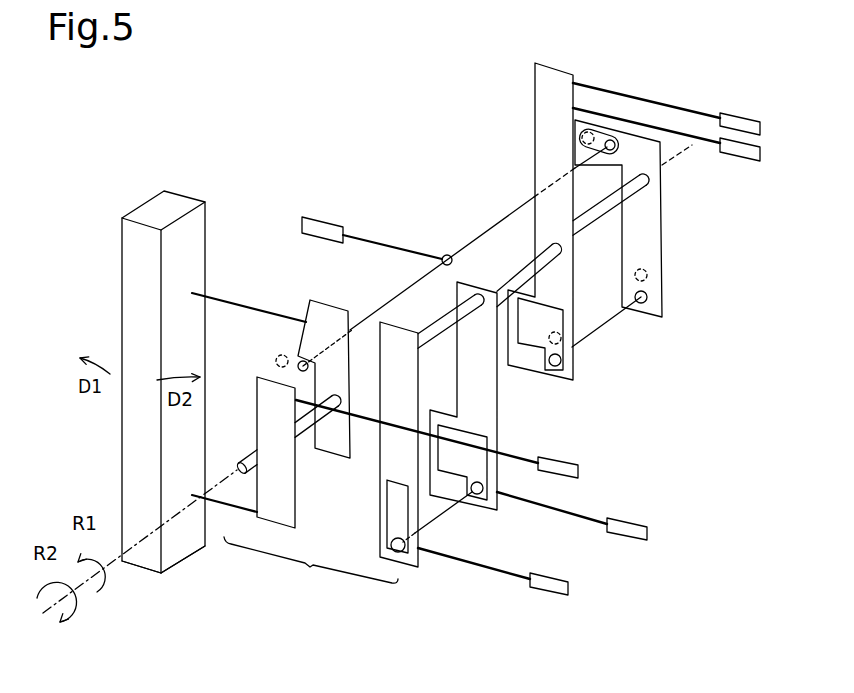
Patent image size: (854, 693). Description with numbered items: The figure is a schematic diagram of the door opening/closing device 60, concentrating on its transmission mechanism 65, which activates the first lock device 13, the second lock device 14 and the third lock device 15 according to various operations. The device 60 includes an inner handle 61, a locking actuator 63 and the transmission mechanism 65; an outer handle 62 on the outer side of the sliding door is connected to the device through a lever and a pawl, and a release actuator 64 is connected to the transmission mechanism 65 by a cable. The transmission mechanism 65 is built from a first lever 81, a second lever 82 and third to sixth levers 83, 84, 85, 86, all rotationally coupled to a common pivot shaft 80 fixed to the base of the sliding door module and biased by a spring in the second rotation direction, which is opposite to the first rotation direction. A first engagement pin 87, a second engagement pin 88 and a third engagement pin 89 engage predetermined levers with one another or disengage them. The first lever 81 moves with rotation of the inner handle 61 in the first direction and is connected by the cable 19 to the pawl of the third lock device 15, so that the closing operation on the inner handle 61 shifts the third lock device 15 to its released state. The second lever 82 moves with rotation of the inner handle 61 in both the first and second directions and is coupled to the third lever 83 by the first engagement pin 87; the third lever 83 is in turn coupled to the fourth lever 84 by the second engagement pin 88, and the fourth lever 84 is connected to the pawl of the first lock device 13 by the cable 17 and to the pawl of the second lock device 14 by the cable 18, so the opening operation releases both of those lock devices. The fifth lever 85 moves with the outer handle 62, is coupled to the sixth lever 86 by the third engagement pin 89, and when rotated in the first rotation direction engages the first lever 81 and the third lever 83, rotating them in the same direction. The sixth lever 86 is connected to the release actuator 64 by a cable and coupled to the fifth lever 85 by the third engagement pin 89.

The first lock device 13 is at (762, 130).
The second lock device 14 is at (762, 155).
The third lock device 15 is at (580, 475).
The cable 17 is at (702, 112).
The cable 18 is at (700, 147).
The cable 19 is at (518, 453).
The door opening/closing device 60 is at (270, 132).
The inner handle 61 is at (120, 242).
The outer handle 62 is at (648, 535).
The locking actuator 63 is at (302, 224).
The release actuator 64 is at (570, 592).
The transmission mechanism 65 is at (311, 567).
The pivot shaft 80 is at (247, 453).
The first lever 81 is at (297, 510).
The second lever 82 is at (335, 459).
The third lever 83 is at (663, 302).
The fourth lever 84 is at (575, 360).
The fifth lever 85 is at (498, 398).
The sixth lever 86 is at (418, 545).
The first engagement pin 87 is at (488, 229).
The second engagement pin 88 is at (605, 328).
The third engagement pin 89 is at (447, 518).